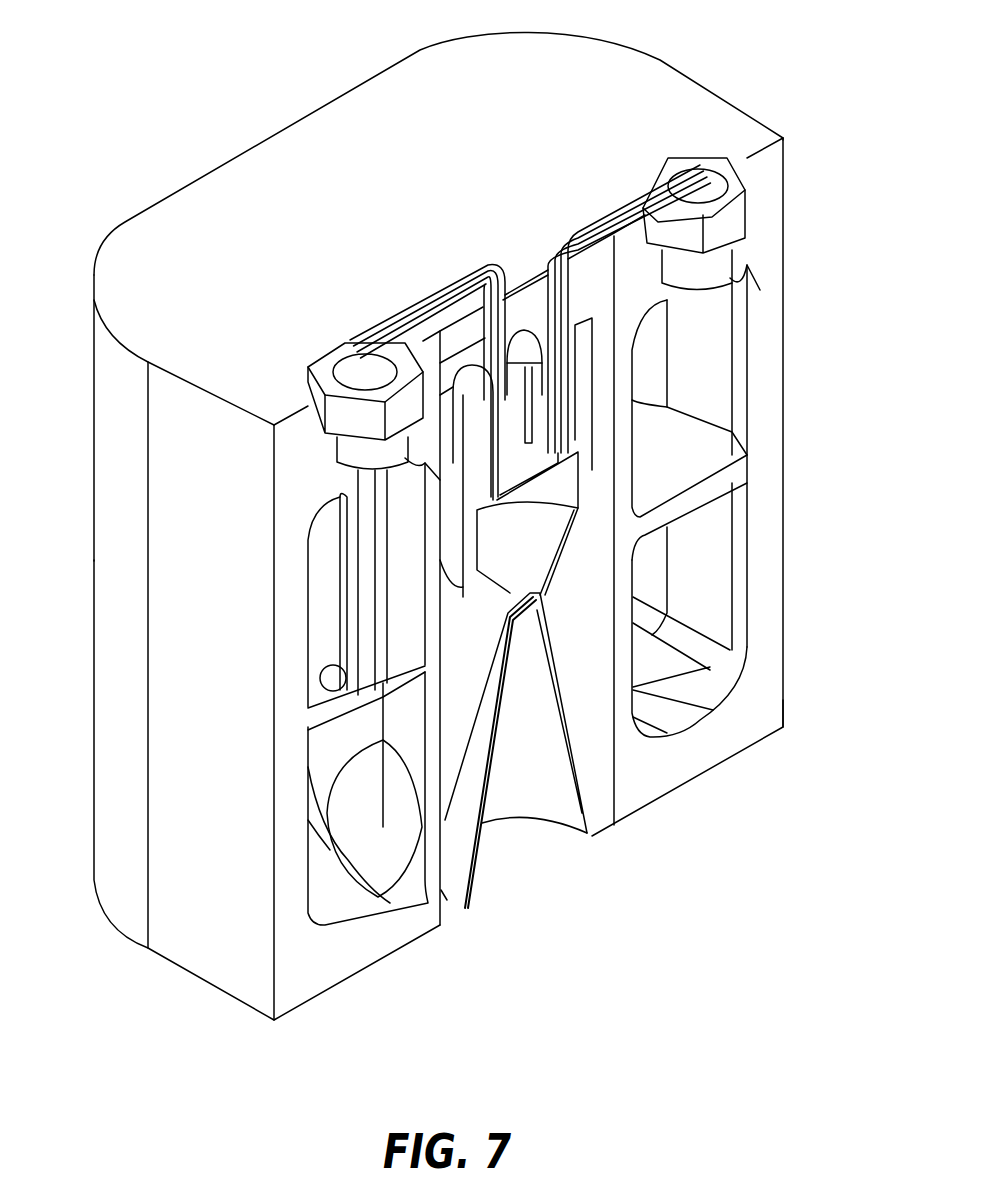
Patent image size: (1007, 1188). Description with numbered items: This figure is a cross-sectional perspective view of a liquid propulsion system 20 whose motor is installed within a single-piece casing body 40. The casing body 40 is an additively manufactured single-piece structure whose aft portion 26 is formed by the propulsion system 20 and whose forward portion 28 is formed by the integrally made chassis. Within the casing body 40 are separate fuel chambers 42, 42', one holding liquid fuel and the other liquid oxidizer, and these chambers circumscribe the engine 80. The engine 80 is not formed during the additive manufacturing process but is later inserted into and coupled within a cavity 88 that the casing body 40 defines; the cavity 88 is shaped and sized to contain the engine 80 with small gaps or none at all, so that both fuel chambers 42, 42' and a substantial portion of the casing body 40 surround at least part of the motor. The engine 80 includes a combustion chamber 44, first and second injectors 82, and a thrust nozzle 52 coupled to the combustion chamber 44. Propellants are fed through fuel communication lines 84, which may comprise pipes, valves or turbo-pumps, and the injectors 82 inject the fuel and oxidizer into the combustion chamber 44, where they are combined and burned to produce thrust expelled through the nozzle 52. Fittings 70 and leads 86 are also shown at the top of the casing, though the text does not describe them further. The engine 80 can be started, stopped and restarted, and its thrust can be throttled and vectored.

The propulsion system 20 is at (112, 74).
The aft portion 26 is at (792, 716).
The forward portion 28 is at (790, 120).
The casing body 40 is at (108, 292).
The fuel chamber 42 is at (551, 704).
The fuel chamber 42' is at (539, 497).
The combustion chamber 44 is at (524, 556).
The thrust nozzle 52 is at (530, 822).
The nut 70 is at (333, 362).
The engine 80 is at (555, 619).
The first and second injector 82 is at (545, 385).
The fuel communication lines 84 is at (418, 306).
The lead 86 is at (352, 490).
The cavity 88 is at (596, 766).